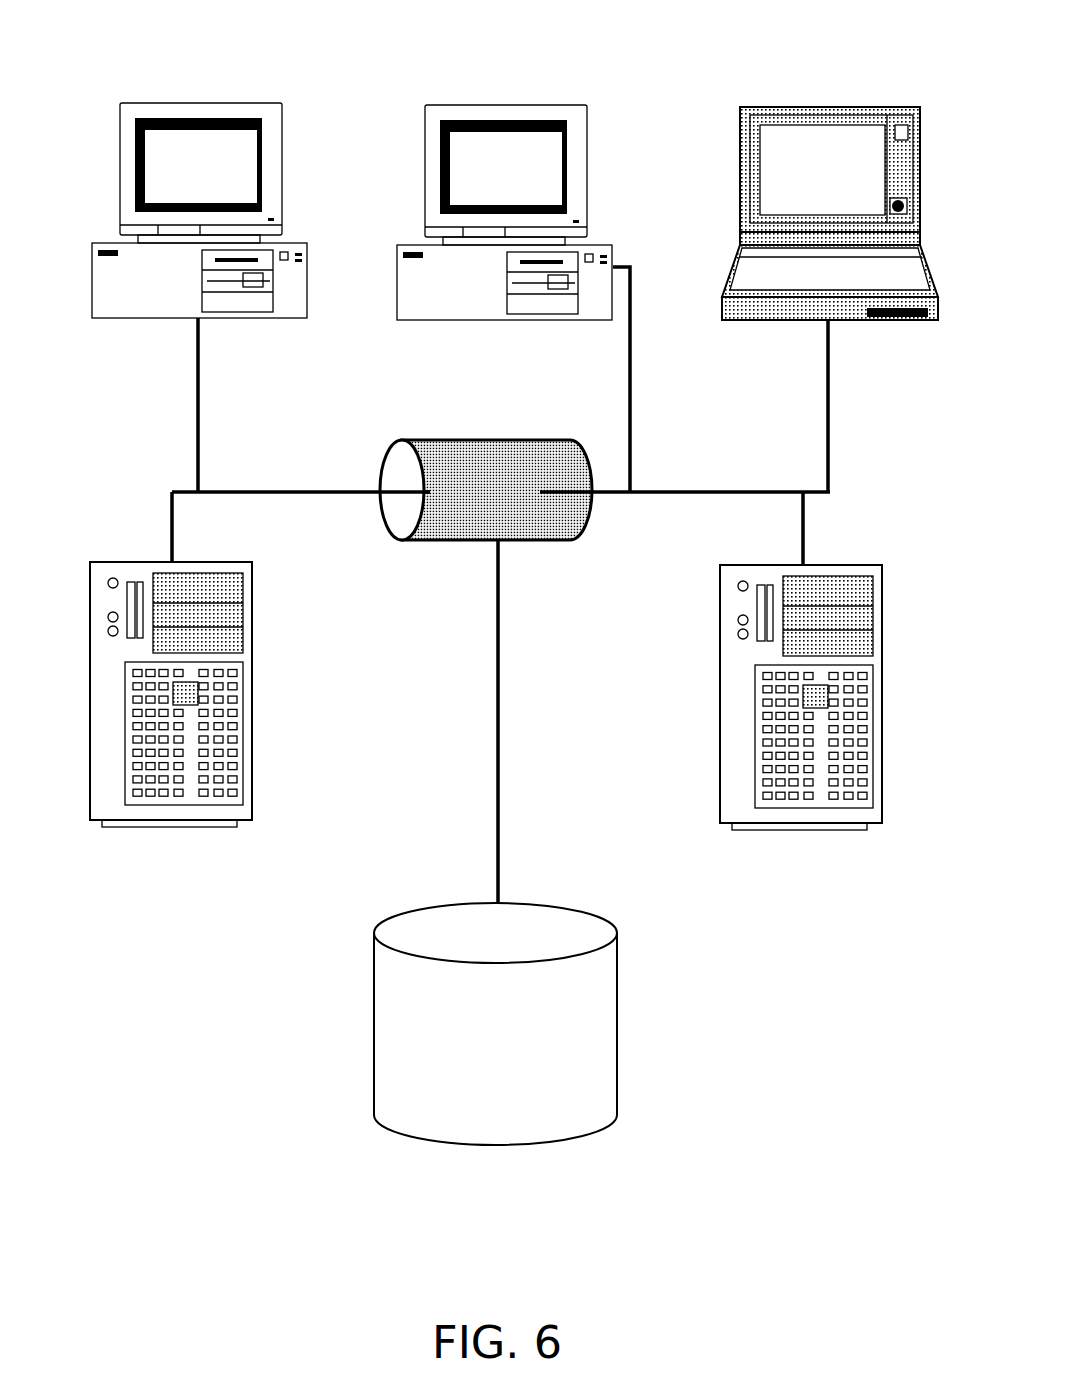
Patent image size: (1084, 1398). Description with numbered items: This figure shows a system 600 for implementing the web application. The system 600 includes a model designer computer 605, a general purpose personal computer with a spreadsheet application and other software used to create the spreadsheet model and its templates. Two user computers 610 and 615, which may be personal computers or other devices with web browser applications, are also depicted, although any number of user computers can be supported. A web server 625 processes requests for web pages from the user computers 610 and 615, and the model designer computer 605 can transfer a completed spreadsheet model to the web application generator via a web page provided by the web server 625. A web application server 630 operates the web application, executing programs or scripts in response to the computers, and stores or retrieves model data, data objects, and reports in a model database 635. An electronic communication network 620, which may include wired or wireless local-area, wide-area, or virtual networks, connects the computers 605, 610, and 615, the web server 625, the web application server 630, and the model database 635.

The system 600 is at (499, 671).
The model designer computer 605 is at (218, 159).
The user computer 610 is at (504, 161).
The user computer 615 is at (830, 161).
The electronic communication network 620 is at (486, 490).
The web server 625 is at (171, 730).
The web application server 630 is at (798, 732).
The model database 635 is at (495, 1024).